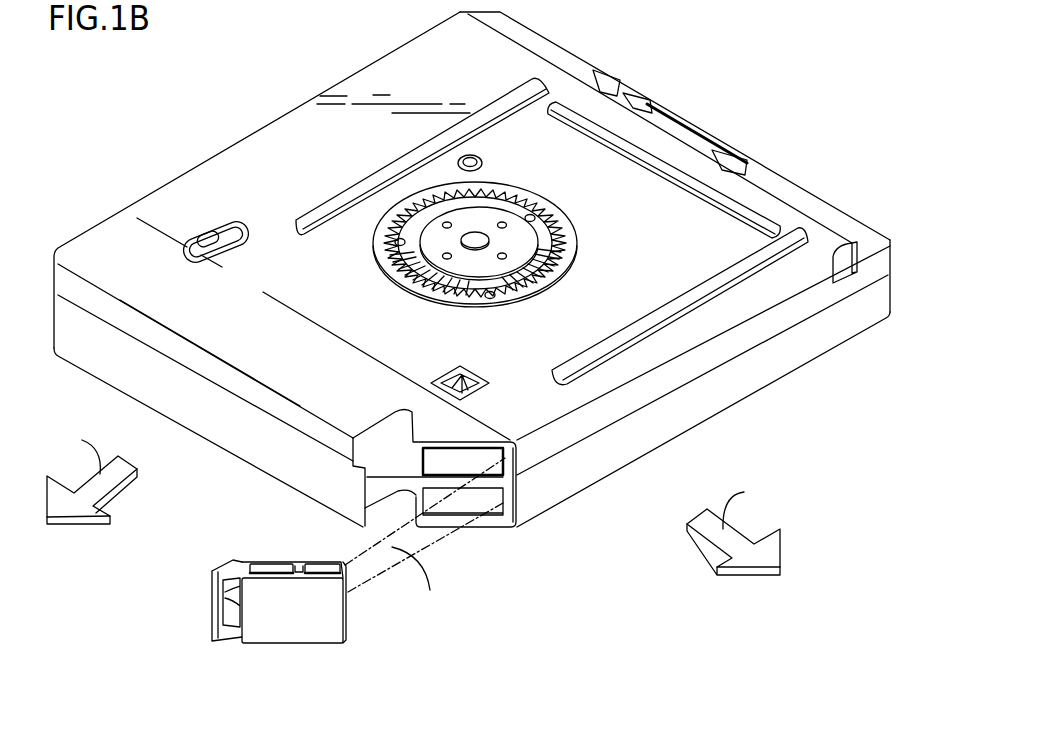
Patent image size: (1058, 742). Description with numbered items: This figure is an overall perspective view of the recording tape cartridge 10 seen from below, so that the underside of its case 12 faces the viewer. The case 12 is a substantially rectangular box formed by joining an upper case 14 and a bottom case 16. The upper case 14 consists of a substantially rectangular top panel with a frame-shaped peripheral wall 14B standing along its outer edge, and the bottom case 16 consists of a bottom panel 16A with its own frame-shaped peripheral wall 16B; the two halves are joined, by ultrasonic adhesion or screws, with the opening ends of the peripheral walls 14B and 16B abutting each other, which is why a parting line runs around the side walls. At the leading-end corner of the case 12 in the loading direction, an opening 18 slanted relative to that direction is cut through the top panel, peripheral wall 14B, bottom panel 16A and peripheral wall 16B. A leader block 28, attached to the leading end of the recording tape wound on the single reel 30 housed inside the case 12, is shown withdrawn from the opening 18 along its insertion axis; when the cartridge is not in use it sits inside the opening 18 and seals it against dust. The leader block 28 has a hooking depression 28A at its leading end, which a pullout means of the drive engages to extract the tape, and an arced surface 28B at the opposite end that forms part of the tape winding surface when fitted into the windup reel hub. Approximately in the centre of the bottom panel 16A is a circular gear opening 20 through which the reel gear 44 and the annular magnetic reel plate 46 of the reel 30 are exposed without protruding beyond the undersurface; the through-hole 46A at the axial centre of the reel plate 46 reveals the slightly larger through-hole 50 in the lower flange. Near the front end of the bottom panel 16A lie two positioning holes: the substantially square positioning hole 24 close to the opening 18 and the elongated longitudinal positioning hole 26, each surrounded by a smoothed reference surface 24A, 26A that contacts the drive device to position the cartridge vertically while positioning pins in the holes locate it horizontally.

The recording tape cartridge 10 is at (278, 96).
The case 12 is at (808, 383).
The upper case 14 is at (688, 391).
The peripheral wall 14B is at (288, 473).
The bottom case 16 is at (690, 349).
The bottom panel 16A is at (252, 352).
The peripheral wall 16B is at (273, 407).
The opening 18 is at (387, 439).
The gear opening 20 is at (576, 241).
The positioning hole 24 is at (468, 371).
The reference surface 24A is at (447, 371).
The positioning hole 26 is at (217, 231).
The reference surface 26A is at (197, 232).
The leader block 28 is at (348, 622).
The hooking depression 28A is at (212, 591).
The arced surface 28B is at (349, 572).
The reel 30 is at (565, 218).
The reel gear 44 is at (536, 212).
The reel plate 46 is at (487, 216).
The through-hole 46A is at (478, 240).
The through-hole 50 is at (677, 281).